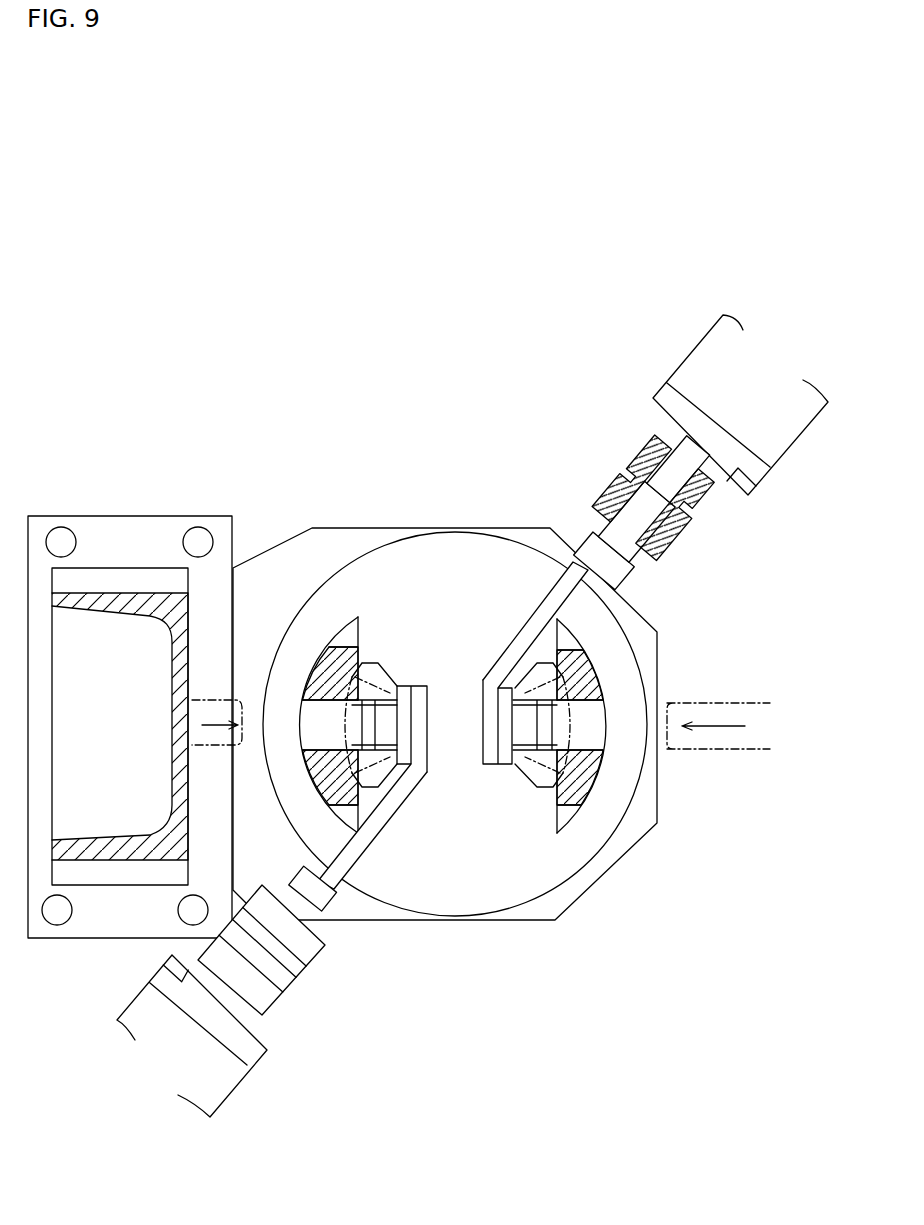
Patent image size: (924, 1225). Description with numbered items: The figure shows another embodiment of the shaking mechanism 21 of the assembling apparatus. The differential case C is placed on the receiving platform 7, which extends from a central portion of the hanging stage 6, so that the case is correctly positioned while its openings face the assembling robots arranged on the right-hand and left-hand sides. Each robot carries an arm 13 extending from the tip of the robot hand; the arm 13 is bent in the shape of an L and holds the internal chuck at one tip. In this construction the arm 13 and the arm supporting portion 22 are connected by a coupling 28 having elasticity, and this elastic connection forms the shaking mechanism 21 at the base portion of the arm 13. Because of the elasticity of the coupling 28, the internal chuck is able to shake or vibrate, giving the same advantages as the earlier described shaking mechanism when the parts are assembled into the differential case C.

The hanging stage 6 is at (135, 597).
The receiving platform 7 is at (322, 548).
The arm 13 is at (570, 548).
The shaking mechanism 21 is at (712, 552).
The arm supporting portion 22 is at (677, 462).
The coupling 28 is at (635, 473).
The differential case C is at (598, 788).